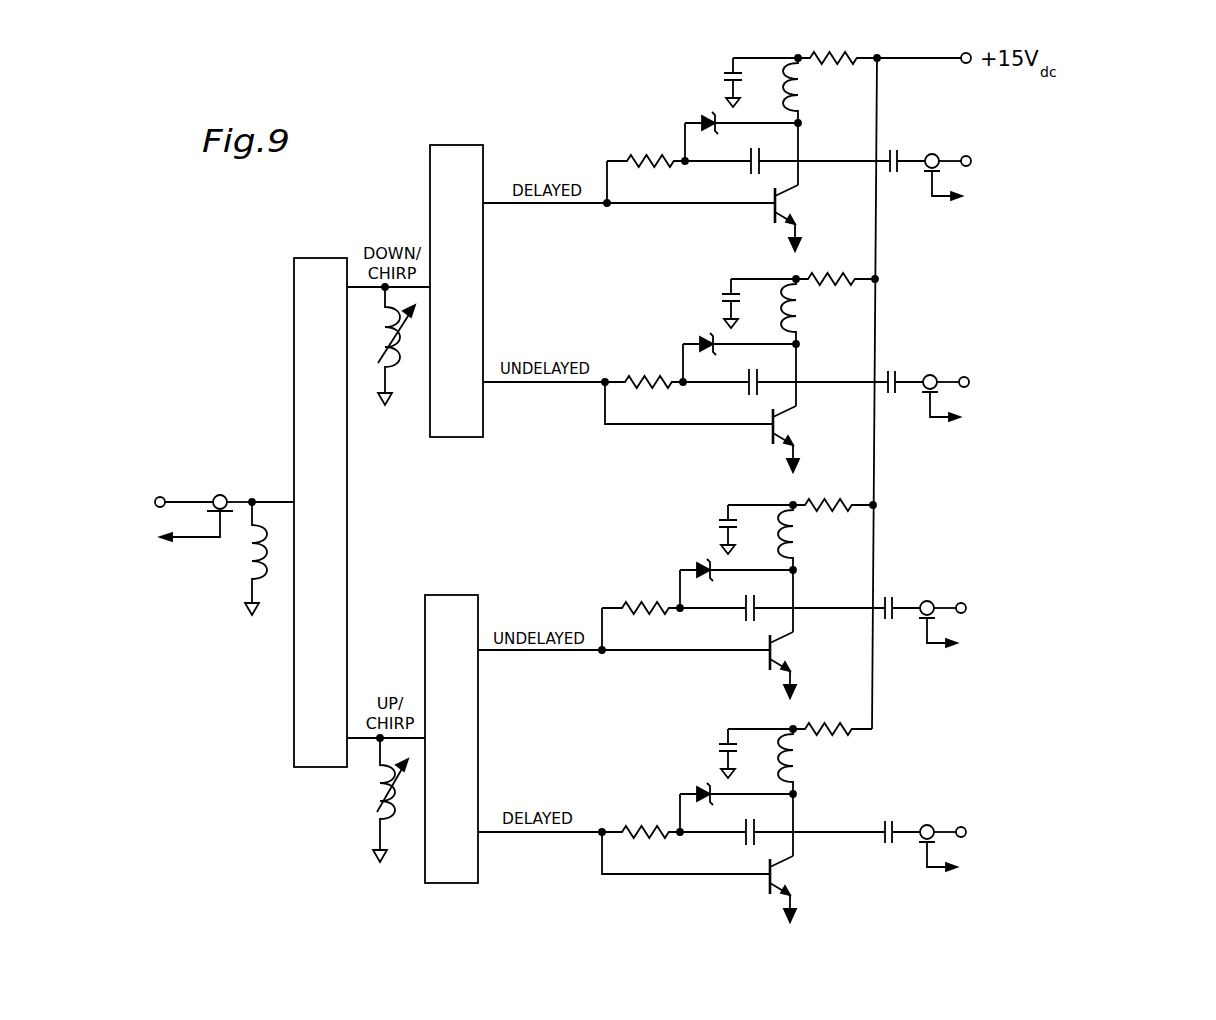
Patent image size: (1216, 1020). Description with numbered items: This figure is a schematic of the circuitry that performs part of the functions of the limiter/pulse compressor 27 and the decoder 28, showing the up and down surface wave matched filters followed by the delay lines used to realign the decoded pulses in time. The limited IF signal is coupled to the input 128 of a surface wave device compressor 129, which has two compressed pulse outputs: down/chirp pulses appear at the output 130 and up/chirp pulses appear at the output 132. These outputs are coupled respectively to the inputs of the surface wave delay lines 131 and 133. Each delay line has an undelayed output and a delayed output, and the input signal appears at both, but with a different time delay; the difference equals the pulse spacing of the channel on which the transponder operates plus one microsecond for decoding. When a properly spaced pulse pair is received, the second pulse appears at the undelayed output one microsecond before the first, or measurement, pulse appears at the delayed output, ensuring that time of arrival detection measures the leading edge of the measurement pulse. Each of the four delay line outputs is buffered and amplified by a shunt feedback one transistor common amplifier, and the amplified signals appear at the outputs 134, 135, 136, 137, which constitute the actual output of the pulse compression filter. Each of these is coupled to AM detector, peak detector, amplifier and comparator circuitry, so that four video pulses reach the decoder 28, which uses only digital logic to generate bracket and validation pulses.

The limiter/pulse compressor 27 is at (221, 483).
The decoder 28 is at (221, 483).
The input 128 is at (155, 506).
The surface wave device compressor 129 is at (305, 268).
The down/chirp output 130 is at (383, 289).
The surface wave delay line 131 is at (438, 177).
The up/chirp output 132 is at (380, 740).
The surface wave delay line 133 is at (435, 648).
The output 134 is at (960, 158).
The output 135 is at (959, 379).
The output 136 is at (957, 605).
The output 137 is at (956, 829).